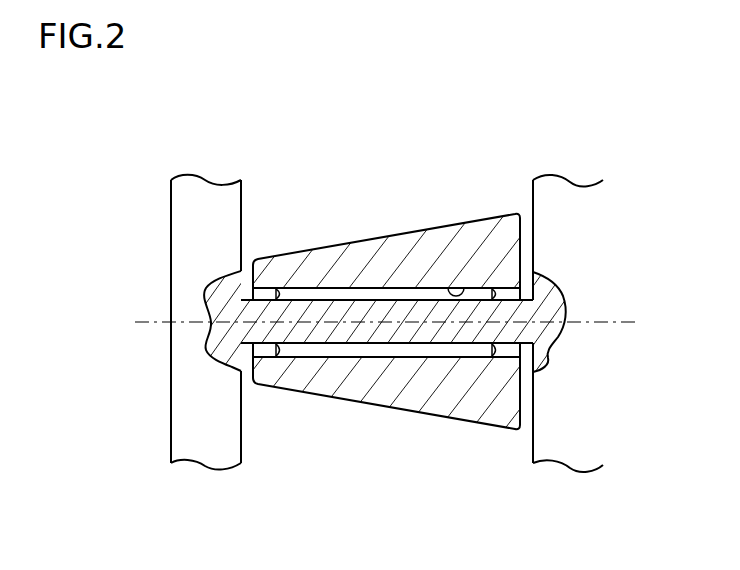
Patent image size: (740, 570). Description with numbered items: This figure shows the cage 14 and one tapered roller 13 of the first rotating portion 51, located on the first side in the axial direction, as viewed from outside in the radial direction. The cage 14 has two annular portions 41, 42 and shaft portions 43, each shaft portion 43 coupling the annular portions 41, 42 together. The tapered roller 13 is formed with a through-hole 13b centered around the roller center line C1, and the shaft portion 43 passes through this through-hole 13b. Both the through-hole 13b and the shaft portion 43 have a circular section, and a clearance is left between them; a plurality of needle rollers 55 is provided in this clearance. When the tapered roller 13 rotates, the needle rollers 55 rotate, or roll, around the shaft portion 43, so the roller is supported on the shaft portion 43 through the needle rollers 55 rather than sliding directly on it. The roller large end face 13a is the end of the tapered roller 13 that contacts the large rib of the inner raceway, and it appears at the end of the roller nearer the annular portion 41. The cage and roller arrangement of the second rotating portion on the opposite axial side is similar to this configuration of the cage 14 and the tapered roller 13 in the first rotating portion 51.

The cage 14 is at (166, 269).
The annular portion 42 is at (194, 190).
The annular portion 41 is at (562, 188).
The shaft portion 43 is at (325, 306).
The first tapered roller 13 is at (412, 231).
The roller large end face 13a is at (522, 252).
The through-hole 13b is at (463, 289).
The first rotating portion 51 is at (468, 448).
The needle roller 55 is at (372, 293).
The roller center line C1 is at (608, 322).